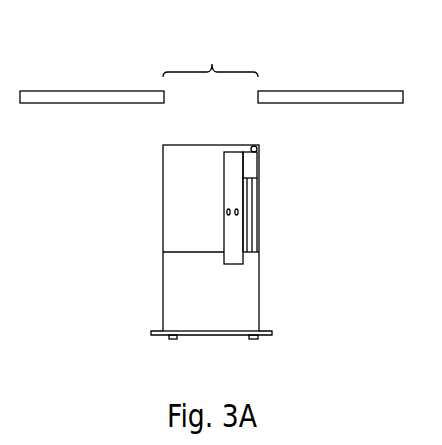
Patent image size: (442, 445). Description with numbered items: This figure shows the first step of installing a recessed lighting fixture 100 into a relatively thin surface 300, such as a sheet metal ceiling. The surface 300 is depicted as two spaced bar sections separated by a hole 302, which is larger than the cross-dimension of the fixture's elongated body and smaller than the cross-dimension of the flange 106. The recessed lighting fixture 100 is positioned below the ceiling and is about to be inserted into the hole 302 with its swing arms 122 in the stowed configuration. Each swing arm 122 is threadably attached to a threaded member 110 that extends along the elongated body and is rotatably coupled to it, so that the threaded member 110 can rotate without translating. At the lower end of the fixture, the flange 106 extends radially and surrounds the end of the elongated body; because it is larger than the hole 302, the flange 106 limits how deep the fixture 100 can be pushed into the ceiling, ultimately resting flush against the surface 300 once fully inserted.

The surface 300 is at (88, 91).
The hole 302 is at (210, 52).
The recessed lighting fixture 100 is at (293, 212).
The swing arm 122 is at (230, 195).
The threaded member 110 is at (258, 238).
The flange 106 is at (273, 337).